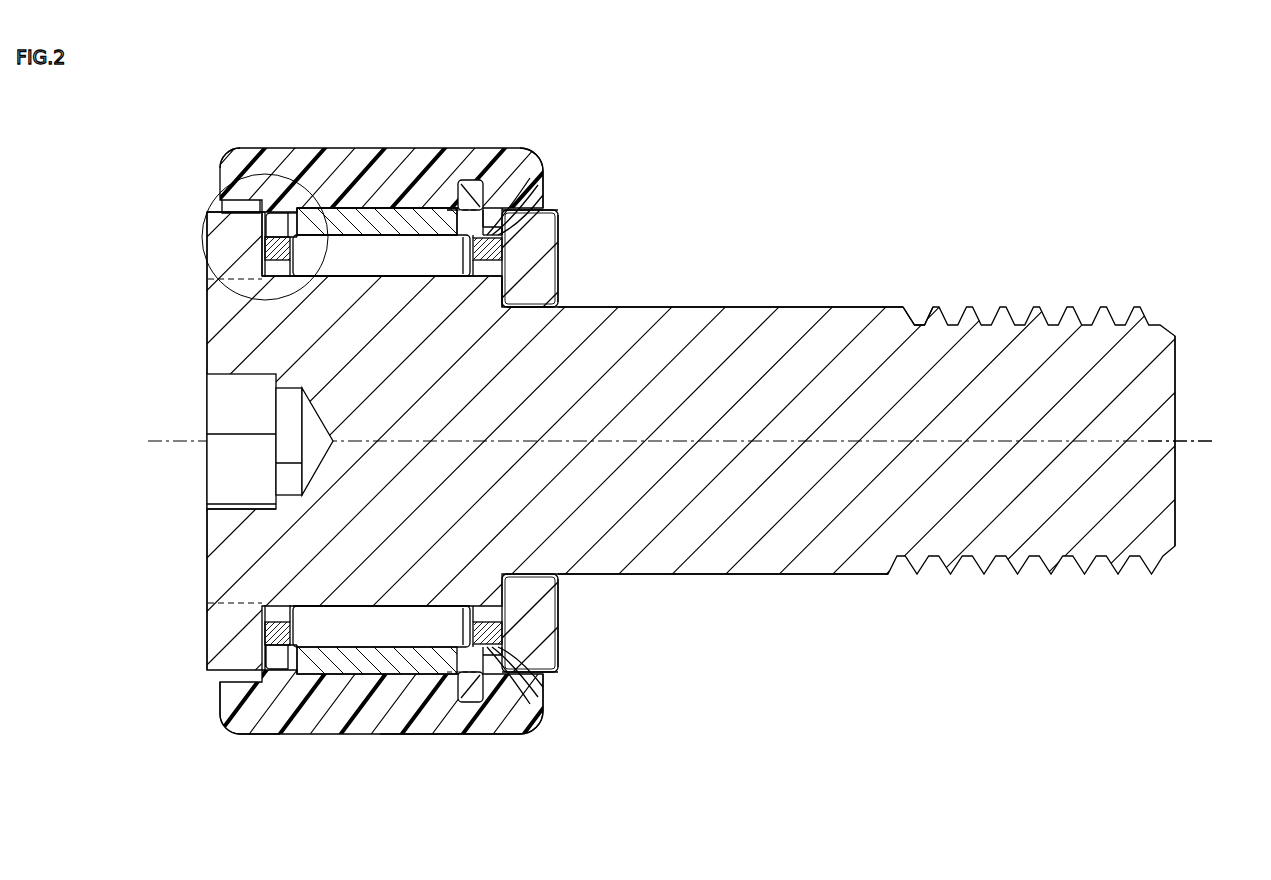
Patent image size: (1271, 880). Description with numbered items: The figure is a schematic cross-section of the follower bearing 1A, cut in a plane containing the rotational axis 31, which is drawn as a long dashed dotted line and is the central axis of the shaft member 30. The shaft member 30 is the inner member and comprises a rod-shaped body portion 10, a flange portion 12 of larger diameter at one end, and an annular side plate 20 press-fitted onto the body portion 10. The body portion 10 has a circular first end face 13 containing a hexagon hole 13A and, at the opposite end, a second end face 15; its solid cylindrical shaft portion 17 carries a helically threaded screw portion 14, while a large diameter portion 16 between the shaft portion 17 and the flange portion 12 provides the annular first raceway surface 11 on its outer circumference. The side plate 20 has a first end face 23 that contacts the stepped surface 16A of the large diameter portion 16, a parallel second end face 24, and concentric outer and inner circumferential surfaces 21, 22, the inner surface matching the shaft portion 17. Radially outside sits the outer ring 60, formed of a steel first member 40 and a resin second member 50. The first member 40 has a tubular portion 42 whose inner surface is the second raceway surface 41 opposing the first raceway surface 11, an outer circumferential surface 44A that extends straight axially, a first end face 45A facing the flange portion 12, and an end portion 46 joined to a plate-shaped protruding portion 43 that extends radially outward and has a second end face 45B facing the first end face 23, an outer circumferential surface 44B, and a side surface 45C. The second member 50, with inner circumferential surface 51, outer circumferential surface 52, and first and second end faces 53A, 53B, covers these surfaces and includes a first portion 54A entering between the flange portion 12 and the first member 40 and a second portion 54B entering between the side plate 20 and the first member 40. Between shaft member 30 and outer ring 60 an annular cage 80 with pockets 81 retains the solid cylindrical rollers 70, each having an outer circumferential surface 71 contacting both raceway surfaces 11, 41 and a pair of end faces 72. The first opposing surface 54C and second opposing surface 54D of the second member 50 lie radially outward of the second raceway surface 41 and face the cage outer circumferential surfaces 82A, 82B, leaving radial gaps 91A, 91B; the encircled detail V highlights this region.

The follower bearing 1A is at (1051, 148).
The body portion 10 is at (683, 322).
The first raceway surface 11 is at (450, 713).
The flange portion 12 is at (227, 240).
The first end face 13 is at (207, 357).
The hexagon hole 13A is at (233, 505).
The screw portion 14 is at (1045, 312).
The second end face 15 is at (1176, 483).
The large diameter portion 16 is at (316, 593).
The stepped surface 16A is at (508, 292).
The shaft portion 17 is at (777, 315).
The side plate 20 is at (548, 262).
The outer circumferential surface 21 is at (545, 190).
The inner circumferential surface 22 is at (518, 312).
The first end face 23 is at (466, 258).
The second end face 24 is at (559, 232).
The shaft member 30 is at (705, 258).
The rotational axis 31 is at (1206, 439).
The first member 40 is at (369, 196).
The second raceway surface 41 is at (350, 250).
The tubular portion 42 is at (406, 215).
The protruding portion 43 is at (473, 182).
The outer circumferential surface 44A is at (290, 222).
The outer circumferential surface 44B is at (485, 192).
The first end face 45A is at (270, 215).
The second end face 45B is at (502, 228).
The side surface 45C is at (447, 215).
The end portion 46 is at (518, 195).
The second member 50 is at (393, 162).
The inner circumferential surface 51 is at (412, 663).
The outer circumferential surface 52 is at (262, 735).
The first end face 53A is at (220, 697).
The second end face 53B is at (545, 690).
The first portion 54A is at (224, 716).
The second portion 54B is at (540, 714).
The first opposing surface 54C is at (270, 250).
The second opposing surface 54D is at (502, 247).
The outer ring 60 is at (340, 104).
The rollers 70 is at (333, 628).
The outer circumferential surface 71 is at (370, 593).
The end faces 72 is at (268, 634).
The cage 80 is at (245, 305).
The pockets 81 is at (277, 237).
The outer circumferential surface 82A is at (226, 216).
The outer circumferential surface 82B is at (527, 182).
The radial gap 91A is at (244, 166).
The radial gap 91B is at (548, 178).
The detail region V is at (215, 275).